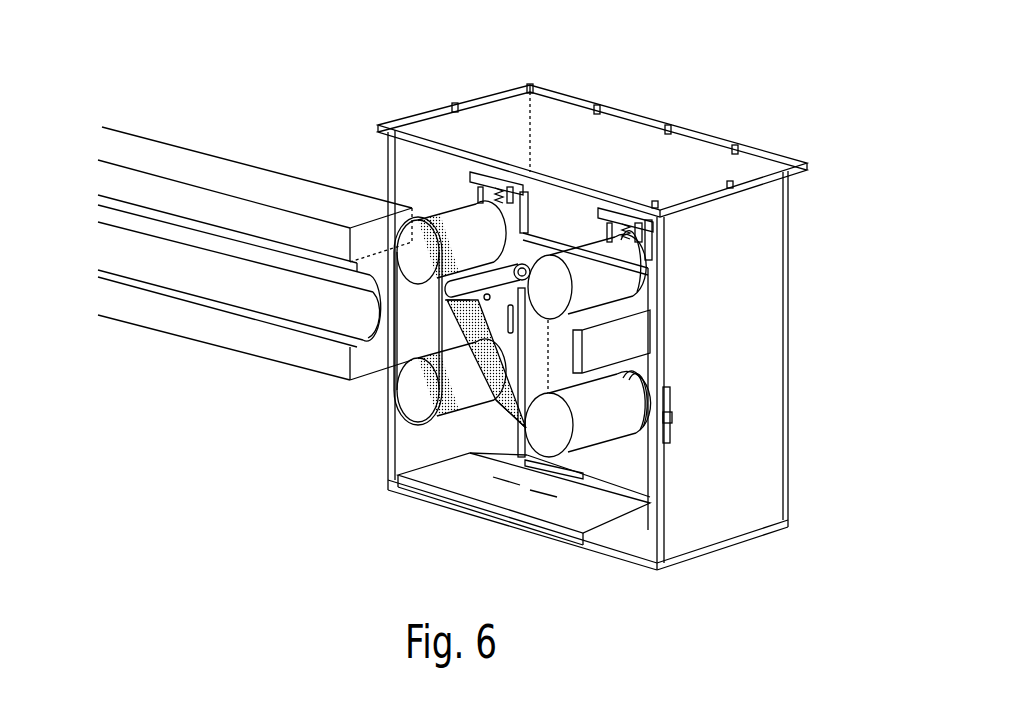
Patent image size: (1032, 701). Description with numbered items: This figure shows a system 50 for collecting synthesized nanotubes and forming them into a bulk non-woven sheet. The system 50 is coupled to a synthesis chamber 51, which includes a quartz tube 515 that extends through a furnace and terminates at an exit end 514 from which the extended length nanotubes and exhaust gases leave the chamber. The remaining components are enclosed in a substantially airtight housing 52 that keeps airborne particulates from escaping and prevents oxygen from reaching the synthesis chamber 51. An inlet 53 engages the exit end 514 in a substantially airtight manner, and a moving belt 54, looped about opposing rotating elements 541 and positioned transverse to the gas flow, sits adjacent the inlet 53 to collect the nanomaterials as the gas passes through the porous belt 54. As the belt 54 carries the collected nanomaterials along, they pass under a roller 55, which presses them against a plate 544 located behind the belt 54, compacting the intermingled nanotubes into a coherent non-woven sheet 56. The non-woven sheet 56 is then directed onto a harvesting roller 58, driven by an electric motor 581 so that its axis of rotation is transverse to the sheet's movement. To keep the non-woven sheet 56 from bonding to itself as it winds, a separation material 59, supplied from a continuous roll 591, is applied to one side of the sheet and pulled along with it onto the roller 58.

The system 50 is at (783, 82).
The synthesis chamber 51 is at (152, 104).
The exit end 514 is at (164, 348).
The quartz tube 515 is at (246, 172).
The housing 52 is at (585, 98).
The inlet 53 is at (392, 345).
The belt 54 is at (452, 393).
The rotating elements 541 is at (420, 243).
The plate 544 is at (460, 350).
The roller 55 is at (490, 268).
The non-woven sheet 56 is at (498, 437).
The roller 58 is at (603, 418).
The electric motor 581 is at (668, 418).
The separation material 59 is at (540, 342).
The continuous roll 591 is at (622, 282).